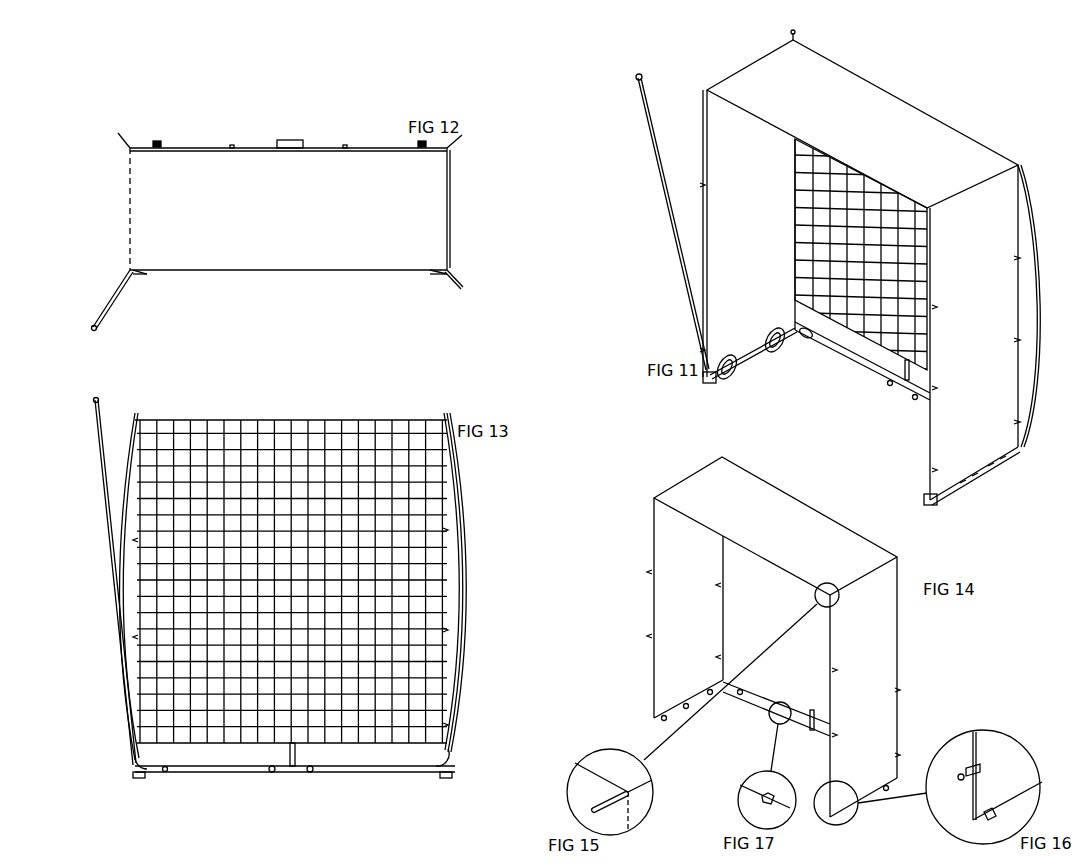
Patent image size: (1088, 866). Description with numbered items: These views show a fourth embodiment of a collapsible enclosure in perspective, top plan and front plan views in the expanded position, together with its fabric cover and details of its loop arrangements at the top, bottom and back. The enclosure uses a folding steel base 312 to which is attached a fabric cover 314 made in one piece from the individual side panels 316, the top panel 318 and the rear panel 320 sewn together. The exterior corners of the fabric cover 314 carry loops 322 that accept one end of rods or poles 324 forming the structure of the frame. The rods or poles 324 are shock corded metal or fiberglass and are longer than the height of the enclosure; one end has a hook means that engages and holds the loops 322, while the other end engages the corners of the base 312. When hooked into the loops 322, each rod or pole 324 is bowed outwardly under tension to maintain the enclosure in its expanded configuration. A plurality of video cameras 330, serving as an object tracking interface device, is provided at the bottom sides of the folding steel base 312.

In FIG. 12, the folding steel base 312 is at (292, 137).
In FIG. 11, the folding steel base 312 is at (855, 363).
In FIG. 11, the fabric cover 314 is at (705, 303).
In FIG. 12, the side panels 316 is at (453, 197).
In FIG. 11, the side panels 316 is at (740, 130).
In FIG. 13, the top panel 318 is at (252, 418).
In FIG. 11, the top panel 318 is at (860, 125).
In FIG. 13, the rear panel 320 is at (352, 494).
In FIG. 11, the rear panel 320 is at (860, 242).
In FIG. 15, the loops 322 is at (597, 801).
In FIG. 12, the rods or poles 324 is at (458, 282).
In FIG. 13, the rods or poles 324 is at (100, 488).
In FIG. 11, the rods or poles 324 is at (668, 223).
In FIG. 11, the video cameras 330 is at (768, 353).